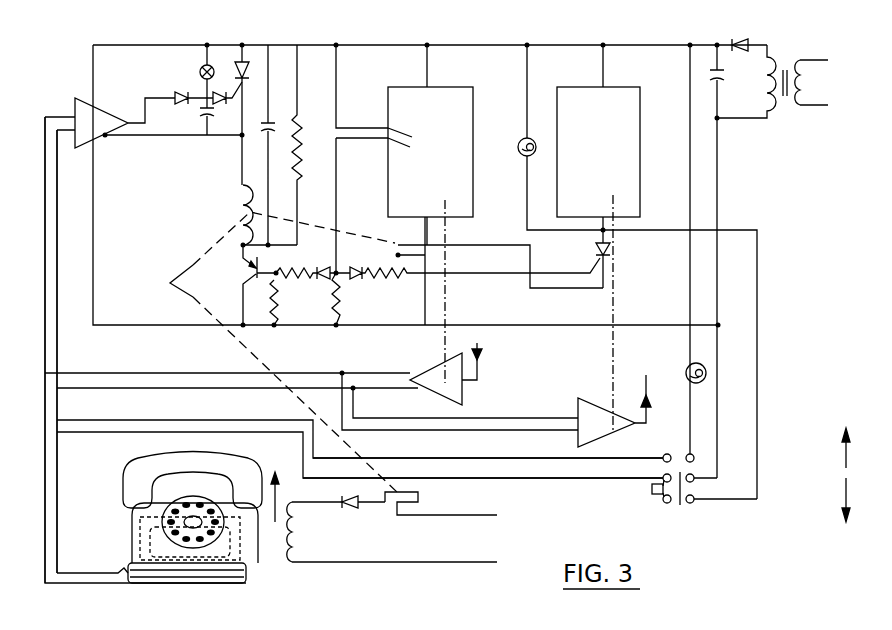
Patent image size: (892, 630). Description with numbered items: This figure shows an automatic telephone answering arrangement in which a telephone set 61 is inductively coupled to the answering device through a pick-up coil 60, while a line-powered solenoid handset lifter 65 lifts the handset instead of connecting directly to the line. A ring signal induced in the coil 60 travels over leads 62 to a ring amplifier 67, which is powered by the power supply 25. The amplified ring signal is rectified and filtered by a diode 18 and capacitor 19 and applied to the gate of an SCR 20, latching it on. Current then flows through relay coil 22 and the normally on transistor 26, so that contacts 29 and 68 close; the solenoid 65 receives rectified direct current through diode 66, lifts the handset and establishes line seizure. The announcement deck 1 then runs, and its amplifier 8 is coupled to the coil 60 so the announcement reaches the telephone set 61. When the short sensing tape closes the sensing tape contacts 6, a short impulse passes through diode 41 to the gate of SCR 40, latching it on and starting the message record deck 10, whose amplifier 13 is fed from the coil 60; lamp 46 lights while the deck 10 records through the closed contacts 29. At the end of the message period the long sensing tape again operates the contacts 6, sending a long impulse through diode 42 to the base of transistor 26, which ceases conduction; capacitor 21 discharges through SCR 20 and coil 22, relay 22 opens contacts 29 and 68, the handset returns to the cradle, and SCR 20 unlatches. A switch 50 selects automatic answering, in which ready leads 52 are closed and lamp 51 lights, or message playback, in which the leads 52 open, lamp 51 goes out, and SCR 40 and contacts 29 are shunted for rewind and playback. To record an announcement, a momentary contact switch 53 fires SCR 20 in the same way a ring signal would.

The announcement deck 1 is at (447, 87).
The sensing tape contacts 6 is at (416, 130).
The amplifier 8 is at (440, 362).
The message record deck 10 is at (627, 87).
The amplifier 13 is at (583, 398).
The diode 18 is at (190, 83).
The capacitor 19 is at (192, 128).
The SCR 20 is at (245, 60).
The capacitor 21 is at (272, 122).
The relay coil 22 is at (243, 204).
The power supply 25 is at (748, 68).
The transistor 26 is at (245, 270).
The relay contacts 29 is at (392, 252).
The SCR 40 is at (609, 250).
The diode 41 is at (350, 269).
The diode 42 is at (331, 269).
The lamp 46 is at (522, 157).
The switch 50 is at (670, 518).
The lamp 51 is at (687, 365).
The ready leads 52 is at (612, 478).
The momentary contact switch 53 is at (207, 63).
The pick-up coil 60 is at (241, 584).
The telephone set 61 is at (165, 552).
The leads 62 is at (56, 495).
The solenoid handset lifter 65 is at (300, 523).
The diode 66 is at (365, 505).
The ring amplifier 67 is at (90, 100).
The contacts 68 is at (427, 512).